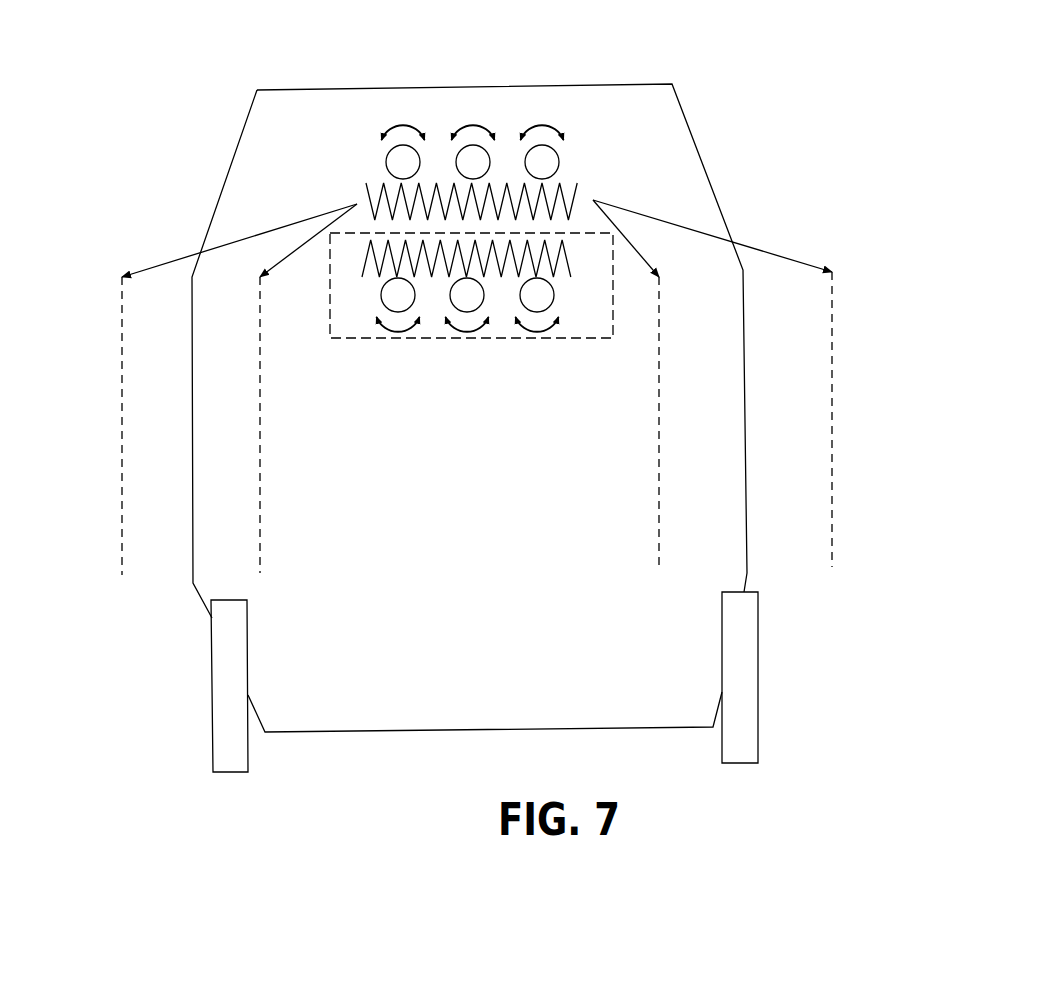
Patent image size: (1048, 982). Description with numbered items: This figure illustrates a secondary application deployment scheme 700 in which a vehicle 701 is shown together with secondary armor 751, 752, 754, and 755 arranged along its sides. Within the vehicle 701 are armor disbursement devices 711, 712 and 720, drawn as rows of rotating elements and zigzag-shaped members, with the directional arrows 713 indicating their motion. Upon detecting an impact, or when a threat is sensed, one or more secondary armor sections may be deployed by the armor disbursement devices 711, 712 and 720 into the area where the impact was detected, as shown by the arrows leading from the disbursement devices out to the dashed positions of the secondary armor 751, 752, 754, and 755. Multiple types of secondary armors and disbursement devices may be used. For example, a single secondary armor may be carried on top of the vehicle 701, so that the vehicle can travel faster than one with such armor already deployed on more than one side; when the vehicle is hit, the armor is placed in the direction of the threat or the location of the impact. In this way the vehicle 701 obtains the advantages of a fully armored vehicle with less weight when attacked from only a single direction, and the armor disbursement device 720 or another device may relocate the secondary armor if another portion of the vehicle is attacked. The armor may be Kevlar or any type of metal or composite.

The secondary application deployment scheme 700 is at (553, 411).
The vehicle 701 is at (362, 90).
The armor disbursement device 711 is at (388, 160).
The armor disbursement device 712 is at (368, 190).
The oscillation direction arrows 713 is at (406, 123).
The armor disbursement device 720 is at (377, 340).
The secondary armor 751 is at (122, 428).
The secondary armor 752 is at (260, 428).
The secondary armor 754 is at (659, 415).
The secondary armor 755 is at (712, 383).